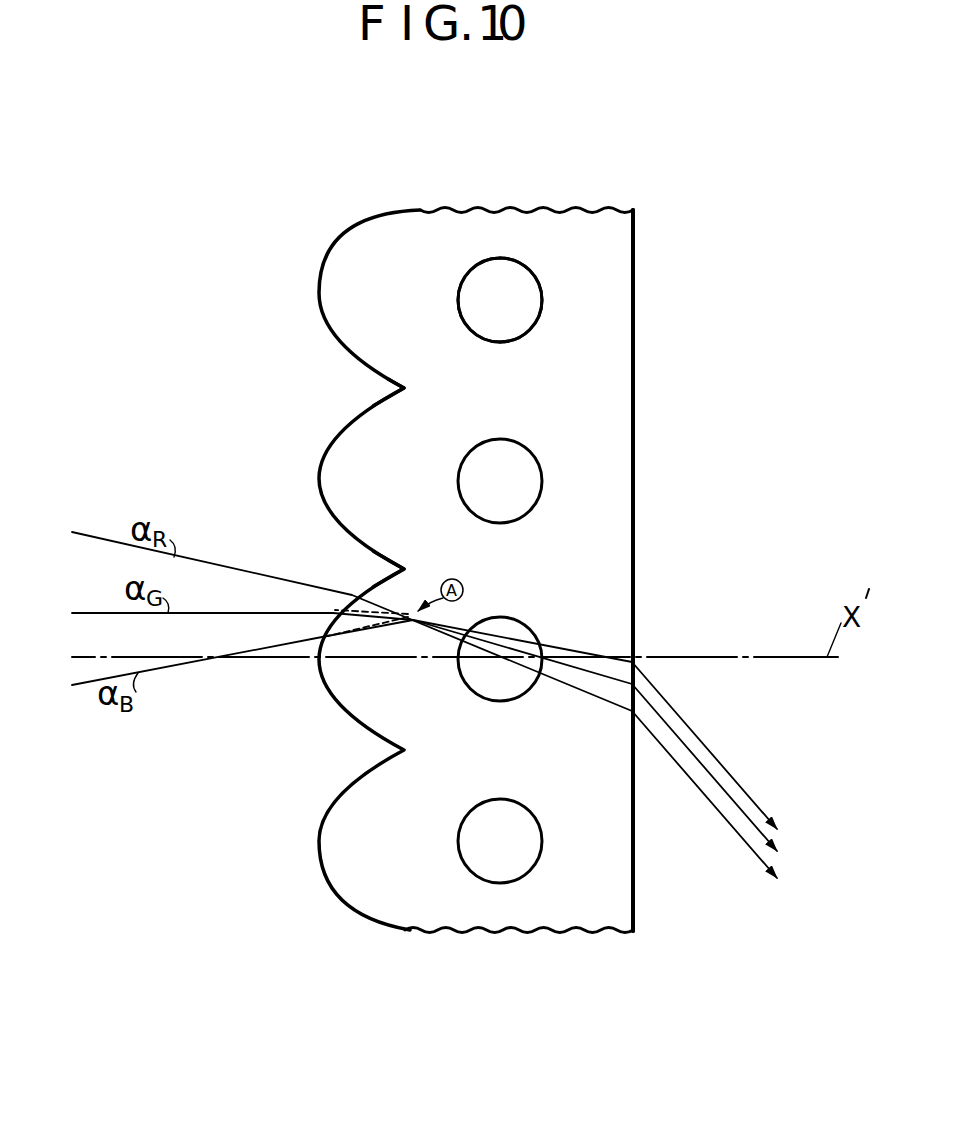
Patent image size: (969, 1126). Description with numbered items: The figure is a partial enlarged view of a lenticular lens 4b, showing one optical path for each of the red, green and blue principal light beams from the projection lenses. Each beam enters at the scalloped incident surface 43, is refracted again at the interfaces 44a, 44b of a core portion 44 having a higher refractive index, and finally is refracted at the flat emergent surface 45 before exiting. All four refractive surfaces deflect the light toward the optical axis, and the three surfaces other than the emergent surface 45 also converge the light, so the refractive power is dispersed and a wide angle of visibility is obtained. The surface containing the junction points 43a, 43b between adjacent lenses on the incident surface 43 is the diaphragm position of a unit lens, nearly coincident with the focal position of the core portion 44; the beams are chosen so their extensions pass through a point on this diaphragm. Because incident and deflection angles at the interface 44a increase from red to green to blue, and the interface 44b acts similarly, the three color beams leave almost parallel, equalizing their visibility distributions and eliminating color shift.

The lenticular lens 4b is at (704, 512).
The incident surface 43 is at (340, 241).
The junction point 43a is at (404, 388).
The junction point 43b is at (404, 568).
The core portion 44 is at (508, 258).
The interface on the incident side of the core portion 44a is at (458, 304).
The interface on the emergent side of the core portion 44b is at (542, 300).
The emergent surface 45 is at (633, 250).